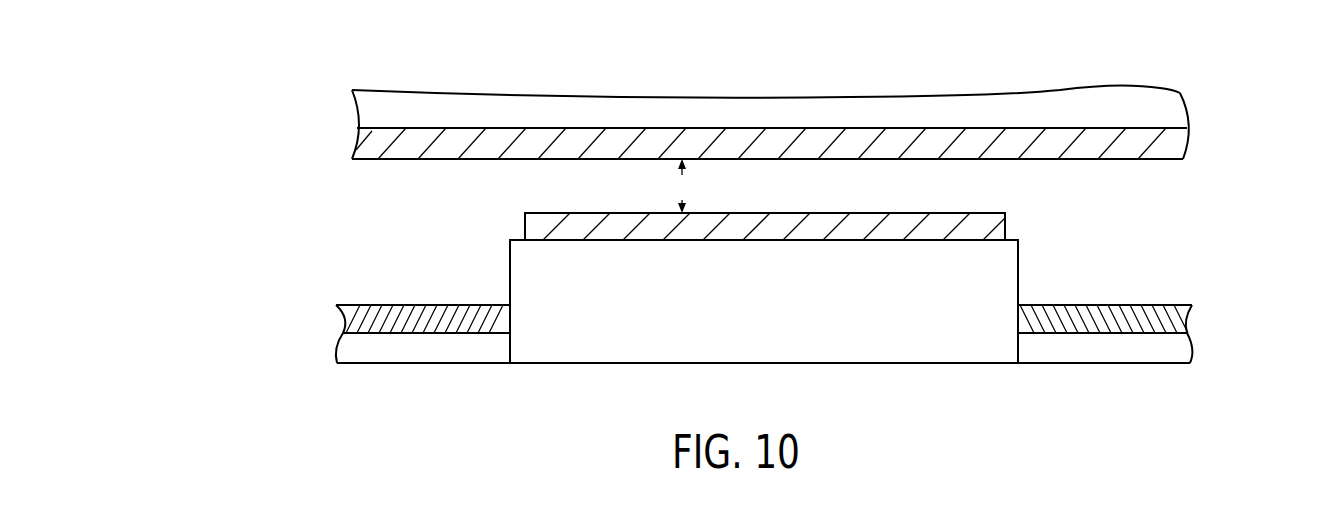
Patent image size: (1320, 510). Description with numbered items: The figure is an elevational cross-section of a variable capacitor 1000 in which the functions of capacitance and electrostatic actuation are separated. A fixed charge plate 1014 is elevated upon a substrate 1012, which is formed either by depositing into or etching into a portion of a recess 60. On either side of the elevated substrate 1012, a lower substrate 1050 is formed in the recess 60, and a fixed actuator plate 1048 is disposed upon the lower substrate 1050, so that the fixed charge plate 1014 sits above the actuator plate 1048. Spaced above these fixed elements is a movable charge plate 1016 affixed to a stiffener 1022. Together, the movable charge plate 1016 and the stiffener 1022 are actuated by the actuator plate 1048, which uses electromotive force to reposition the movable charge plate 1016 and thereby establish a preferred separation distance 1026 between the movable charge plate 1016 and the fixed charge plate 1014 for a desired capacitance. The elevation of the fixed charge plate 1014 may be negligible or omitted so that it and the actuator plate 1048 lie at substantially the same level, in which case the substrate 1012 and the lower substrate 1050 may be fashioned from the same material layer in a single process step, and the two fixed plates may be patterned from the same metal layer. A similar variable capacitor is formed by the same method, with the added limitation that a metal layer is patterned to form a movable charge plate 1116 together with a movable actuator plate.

The variable capacitor 1000 is at (208, 72).
The stiffener 1022 is at (1177, 115).
The movable charge plate 1016 is at (1157, 150).
The separation distance 1026 is at (682, 186).
The fixed charge plate 1014 is at (532, 227).
The substrate 1012 is at (762, 318).
The actuator plate 1048 is at (340, 318).
The lower substrate 1050 is at (347, 347).
The recess 60 is at (1060, 270).
The movable charge plate 1116 is at (830, 499).